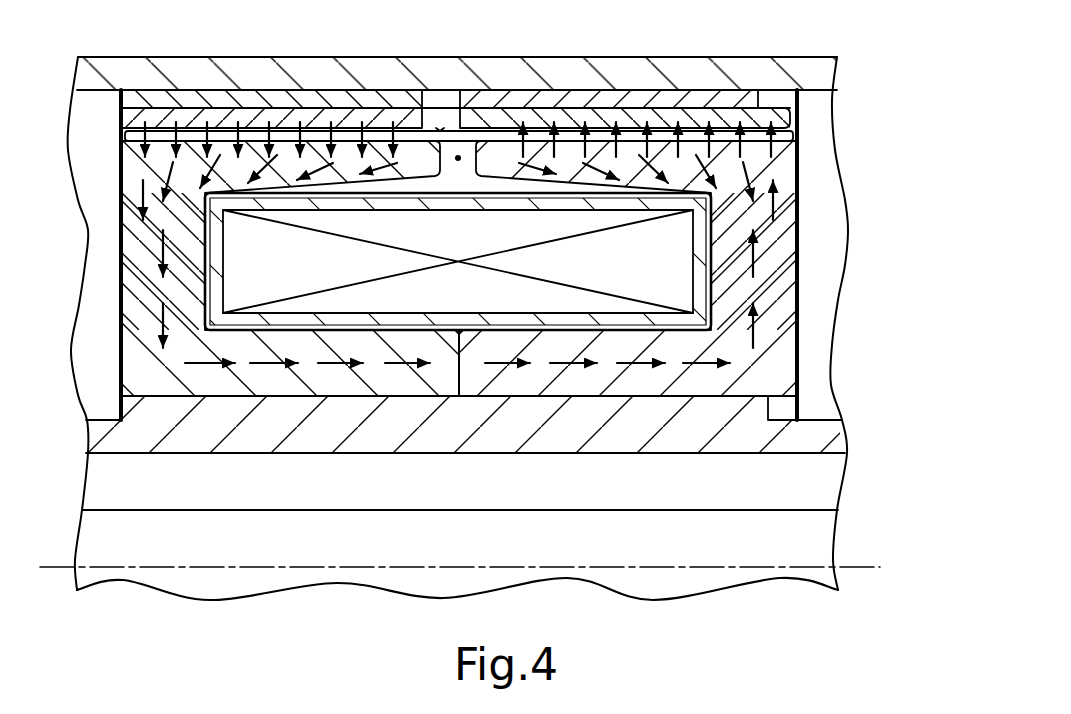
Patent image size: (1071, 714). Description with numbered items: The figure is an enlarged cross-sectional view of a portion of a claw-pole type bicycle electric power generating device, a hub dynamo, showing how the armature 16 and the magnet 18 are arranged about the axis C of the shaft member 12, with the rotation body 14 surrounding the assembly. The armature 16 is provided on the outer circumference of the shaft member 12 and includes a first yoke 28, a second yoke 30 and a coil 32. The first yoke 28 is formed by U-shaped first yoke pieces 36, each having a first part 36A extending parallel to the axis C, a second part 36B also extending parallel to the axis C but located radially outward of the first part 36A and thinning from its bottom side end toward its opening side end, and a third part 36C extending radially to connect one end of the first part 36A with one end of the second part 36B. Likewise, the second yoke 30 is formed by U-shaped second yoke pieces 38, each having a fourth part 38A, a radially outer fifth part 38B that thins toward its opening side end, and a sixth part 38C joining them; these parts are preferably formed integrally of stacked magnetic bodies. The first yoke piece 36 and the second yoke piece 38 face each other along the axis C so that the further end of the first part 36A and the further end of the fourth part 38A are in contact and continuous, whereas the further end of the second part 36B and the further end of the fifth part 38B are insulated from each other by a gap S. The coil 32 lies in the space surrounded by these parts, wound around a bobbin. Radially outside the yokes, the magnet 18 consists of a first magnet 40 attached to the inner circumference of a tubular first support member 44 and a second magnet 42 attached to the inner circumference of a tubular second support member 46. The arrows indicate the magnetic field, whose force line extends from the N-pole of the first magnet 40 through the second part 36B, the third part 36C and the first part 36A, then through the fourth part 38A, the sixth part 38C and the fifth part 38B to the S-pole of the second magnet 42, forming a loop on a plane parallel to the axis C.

The shaft member 12 is at (817, 425).
The rotation body 14 is at (795, 57).
The armature 16 is at (865, 147).
The magnet 18 is at (817, 117).
The first yoke 28 is at (135, 310).
The second yoke 30 is at (786, 310).
The coil 32 is at (447, 216).
The first yoke piece 36 is at (135, 253).
The first part 36A is at (302, 385).
The second part 36B is at (348, 157).
The third part 36C is at (135, 215).
The second yoke piece 38 is at (786, 253).
The fourth part 38A is at (598, 385).
The fifth part 38B is at (571, 150).
The sixth part 38C is at (786, 213).
The first magnet 40 is at (217, 116).
The second magnet 42 is at (700, 113).
The first support member 44 is at (274, 97).
The second support member 46 is at (673, 100).
The gap S is at (458, 156).
The axis C is at (865, 565).